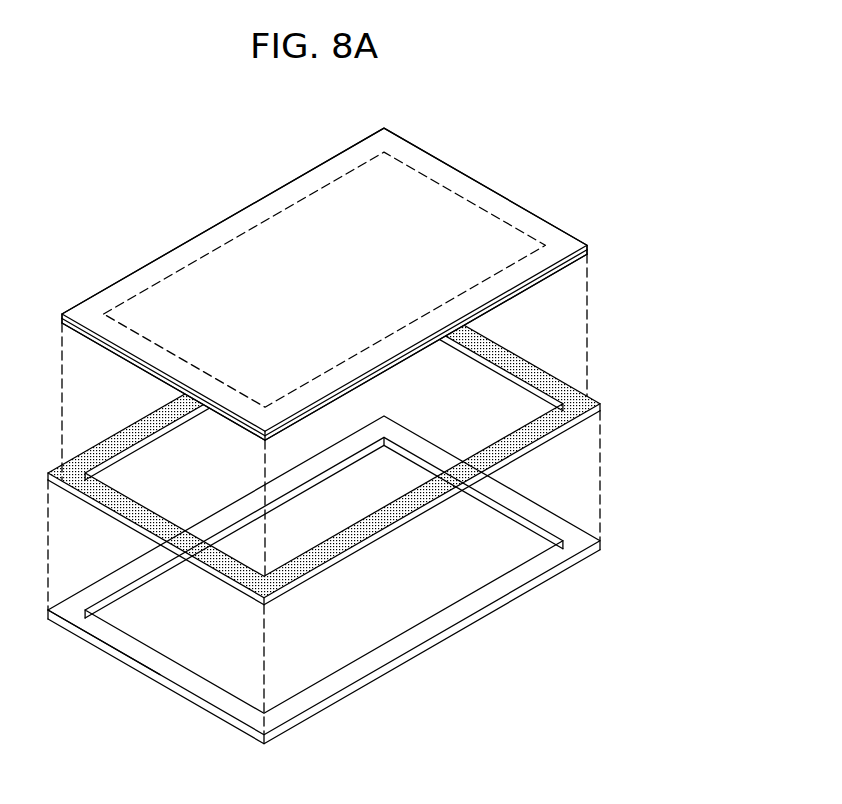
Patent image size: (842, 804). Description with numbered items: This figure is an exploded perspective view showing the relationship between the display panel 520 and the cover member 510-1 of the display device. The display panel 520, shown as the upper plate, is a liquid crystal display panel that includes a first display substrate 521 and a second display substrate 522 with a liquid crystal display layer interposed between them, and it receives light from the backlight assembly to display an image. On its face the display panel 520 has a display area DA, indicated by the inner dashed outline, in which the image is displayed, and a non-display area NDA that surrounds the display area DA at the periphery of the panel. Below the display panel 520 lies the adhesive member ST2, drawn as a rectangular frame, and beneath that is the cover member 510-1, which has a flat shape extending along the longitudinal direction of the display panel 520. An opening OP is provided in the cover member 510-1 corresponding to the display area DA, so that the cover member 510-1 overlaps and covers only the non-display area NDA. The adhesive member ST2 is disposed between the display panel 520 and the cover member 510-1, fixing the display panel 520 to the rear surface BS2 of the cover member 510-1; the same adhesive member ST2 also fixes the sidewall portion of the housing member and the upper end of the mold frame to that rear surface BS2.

The display panel 520 is at (398, 284).
The first display substrate 521 is at (369, 282).
The second display substrate 522 is at (587, 251).
The display area DA is at (243, 234).
The non-display area NDA is at (281, 205).
The adhesive member ST2 is at (601, 404).
The cover member 510-1 is at (374, 580).
The opening OP is at (420, 592).
The rear surface BS2 is at (125, 641).